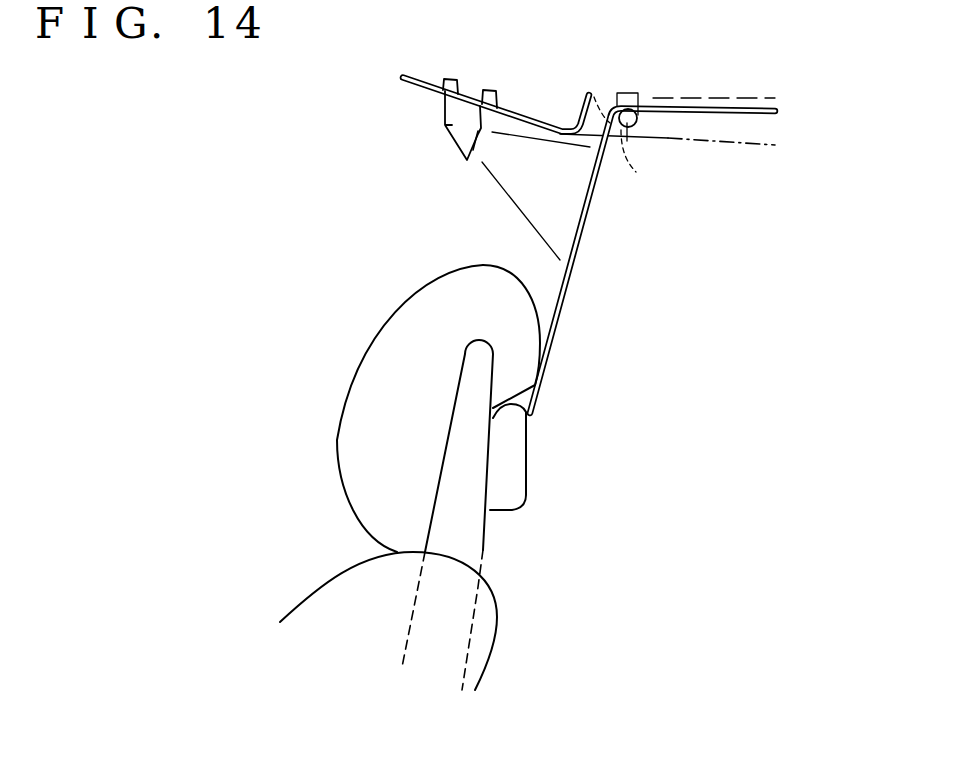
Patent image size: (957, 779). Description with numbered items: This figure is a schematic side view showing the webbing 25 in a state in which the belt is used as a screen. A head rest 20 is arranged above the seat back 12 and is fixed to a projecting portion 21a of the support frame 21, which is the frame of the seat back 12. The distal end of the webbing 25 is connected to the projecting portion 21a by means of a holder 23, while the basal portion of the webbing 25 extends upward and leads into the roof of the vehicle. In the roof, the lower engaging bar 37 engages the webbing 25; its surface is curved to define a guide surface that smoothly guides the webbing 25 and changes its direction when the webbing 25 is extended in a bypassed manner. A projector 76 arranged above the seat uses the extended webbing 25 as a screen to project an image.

The seat back 12 is at (483, 645).
The head rest 20 is at (402, 320).
The support frame 21 is at (427, 617).
The projecting portion 21a is at (483, 552).
The holder 23 is at (517, 472).
The webbing 25 is at (582, 243).
The lower engaging bar 37 is at (634, 141).
The projector 76 is at (447, 123).